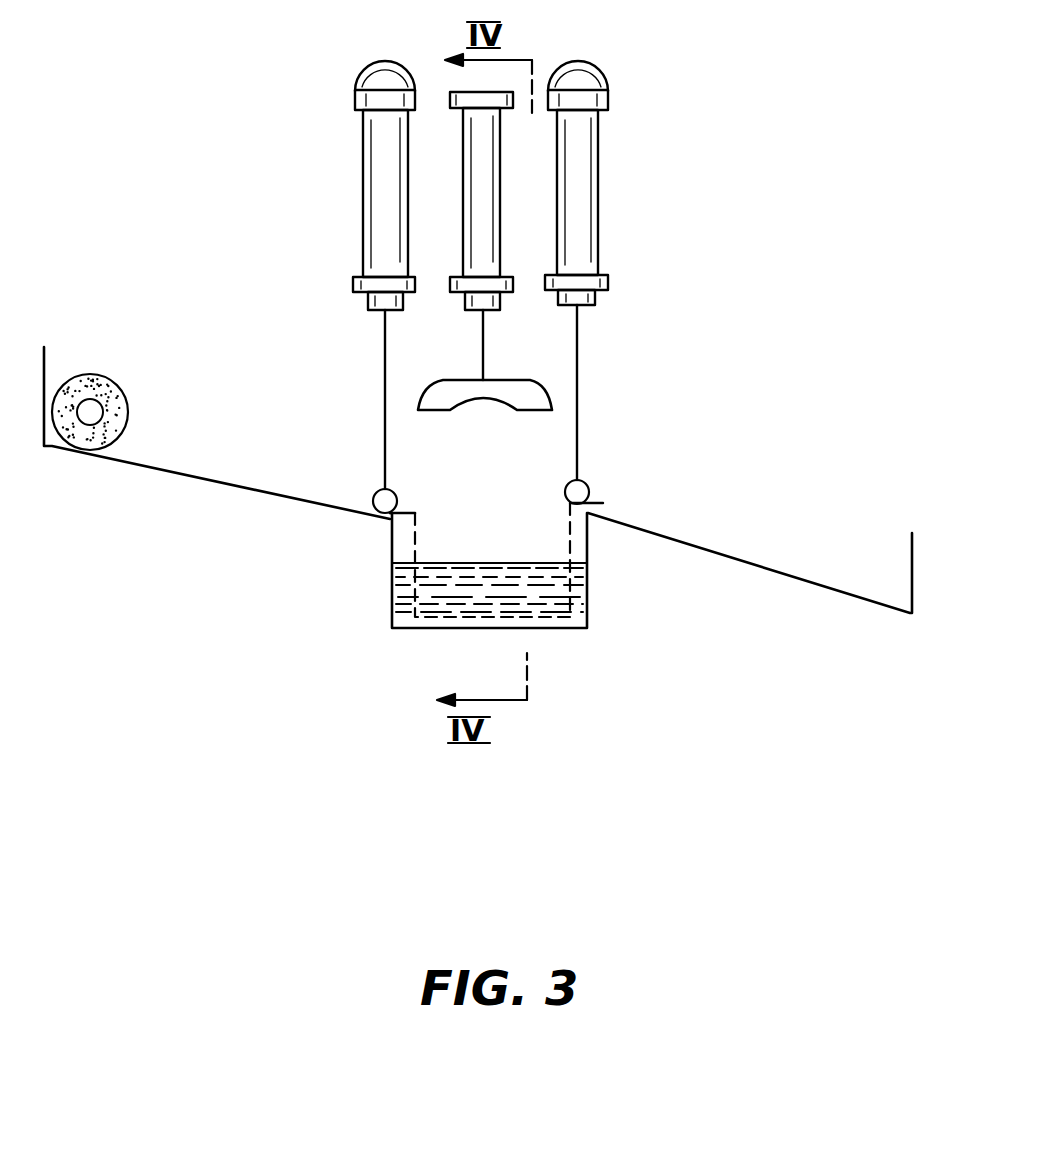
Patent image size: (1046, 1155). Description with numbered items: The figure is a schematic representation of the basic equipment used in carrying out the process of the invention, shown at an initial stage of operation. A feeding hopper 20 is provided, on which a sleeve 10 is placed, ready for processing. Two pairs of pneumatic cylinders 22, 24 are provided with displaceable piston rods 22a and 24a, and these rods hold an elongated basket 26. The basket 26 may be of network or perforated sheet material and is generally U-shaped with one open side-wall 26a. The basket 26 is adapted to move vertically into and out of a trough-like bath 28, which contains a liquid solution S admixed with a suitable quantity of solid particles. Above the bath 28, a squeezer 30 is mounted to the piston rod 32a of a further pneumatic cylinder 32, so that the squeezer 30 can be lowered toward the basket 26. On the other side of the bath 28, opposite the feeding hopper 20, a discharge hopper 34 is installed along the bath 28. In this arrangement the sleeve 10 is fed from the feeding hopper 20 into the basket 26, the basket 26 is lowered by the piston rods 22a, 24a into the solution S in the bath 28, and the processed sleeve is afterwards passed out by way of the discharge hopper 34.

The sleeve 10 is at (130, 415).
The feeding hopper 20 is at (218, 483).
The pneumatic cylinder 22 is at (382, 202).
The piston rod 22a is at (380, 407).
The pneumatic cylinder 24 is at (572, 247).
The piston rod 24a is at (577, 348).
The elongated basket 26 is at (565, 613).
The open side-wall 26a is at (572, 543).
The trough-like bath 28 is at (392, 600).
The squeezer 30 is at (532, 397).
The pneumatic cylinder 32 is at (485, 175).
The piston rod 32a is at (498, 338).
The discharge hopper 34 is at (747, 565).
The liquid solution S is at (553, 605).